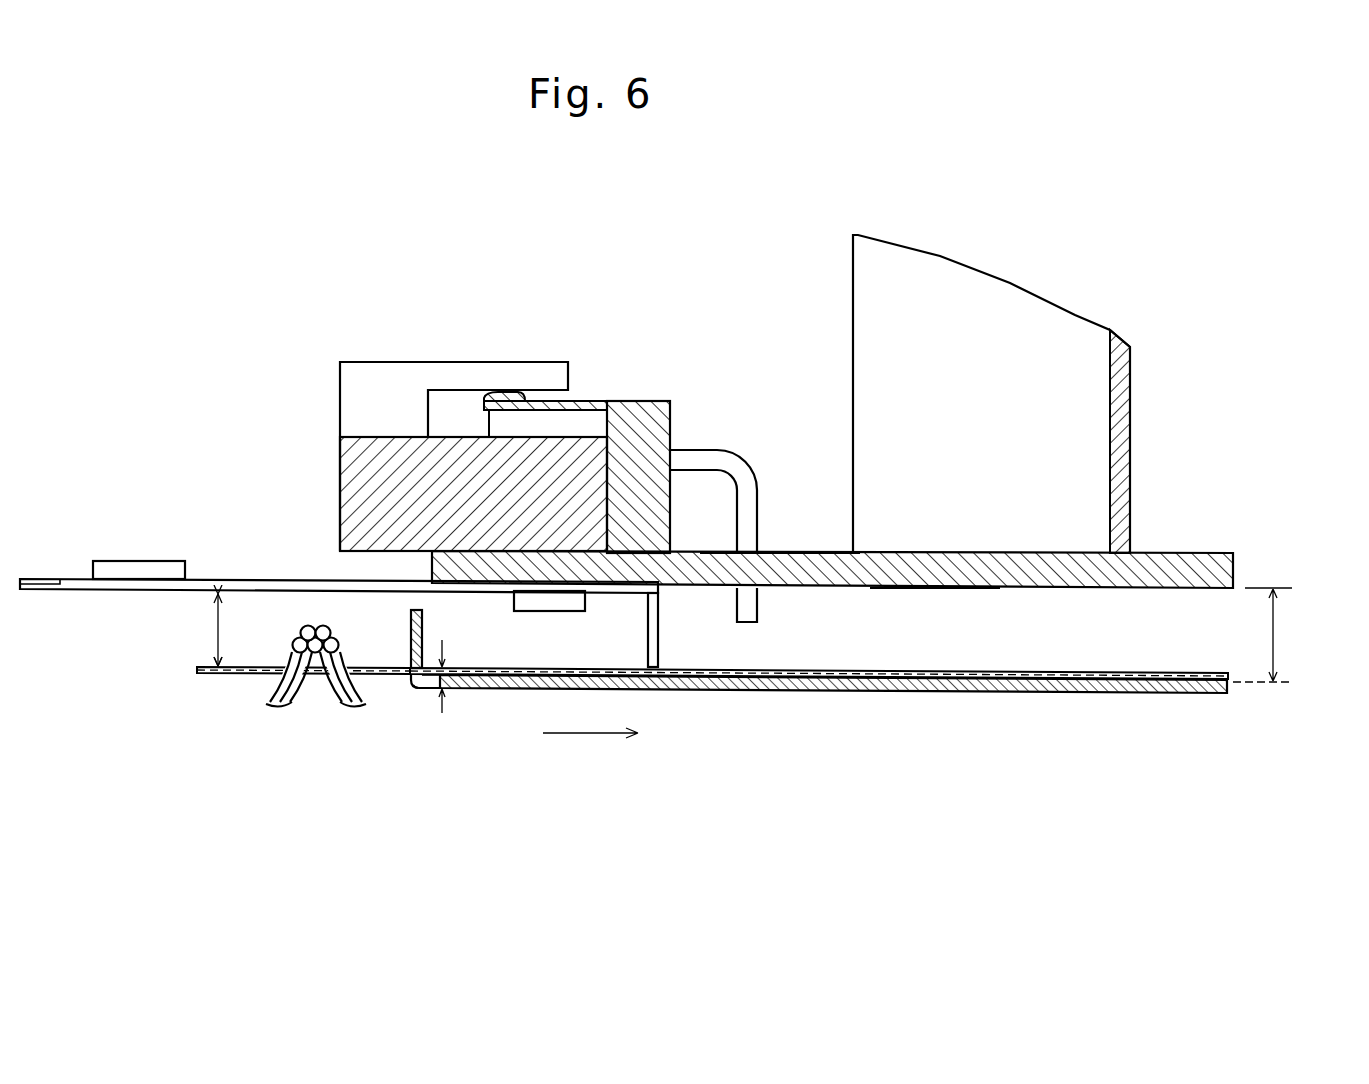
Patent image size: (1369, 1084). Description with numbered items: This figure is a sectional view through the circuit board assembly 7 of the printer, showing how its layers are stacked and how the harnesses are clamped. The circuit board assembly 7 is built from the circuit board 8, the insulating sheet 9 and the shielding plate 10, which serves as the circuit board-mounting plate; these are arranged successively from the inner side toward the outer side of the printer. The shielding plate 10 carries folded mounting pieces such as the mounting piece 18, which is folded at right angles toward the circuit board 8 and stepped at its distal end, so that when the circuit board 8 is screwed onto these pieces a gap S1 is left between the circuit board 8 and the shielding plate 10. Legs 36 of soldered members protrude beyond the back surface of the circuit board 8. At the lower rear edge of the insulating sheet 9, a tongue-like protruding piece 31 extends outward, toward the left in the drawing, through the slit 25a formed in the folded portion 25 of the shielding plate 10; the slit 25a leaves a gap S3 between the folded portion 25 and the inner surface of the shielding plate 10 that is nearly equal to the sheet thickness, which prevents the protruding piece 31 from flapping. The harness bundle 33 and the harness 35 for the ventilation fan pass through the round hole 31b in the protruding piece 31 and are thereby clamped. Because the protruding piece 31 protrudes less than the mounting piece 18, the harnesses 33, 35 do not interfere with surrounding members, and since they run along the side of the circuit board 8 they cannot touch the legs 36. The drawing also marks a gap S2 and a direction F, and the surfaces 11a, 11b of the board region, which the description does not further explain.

The circuit board assembly 7 is at (209, 367).
The circuit board 8 is at (1175, 552).
The insulating sheet 9 is at (1024, 671).
The shielding plate 10 is at (996, 696).
The upper portion of wall 11a is at (812, 552).
The lower portion of wall 11b is at (902, 589).
The mounting piece 18 is at (38, 578).
The folded portion 25 is at (422, 628).
The slit 25a is at (432, 690).
The protruding piece 31 is at (207, 677).
The round hole 31b is at (280, 678).
The harness bundle 33 is at (350, 683).
The harness for fan 35 is at (309, 700).
The legs 36 is at (760, 612).
The gap S1 is at (1275, 638).
The gap S2 is at (216, 626).
The gap S3 is at (449, 694).
The direction F is at (578, 737).